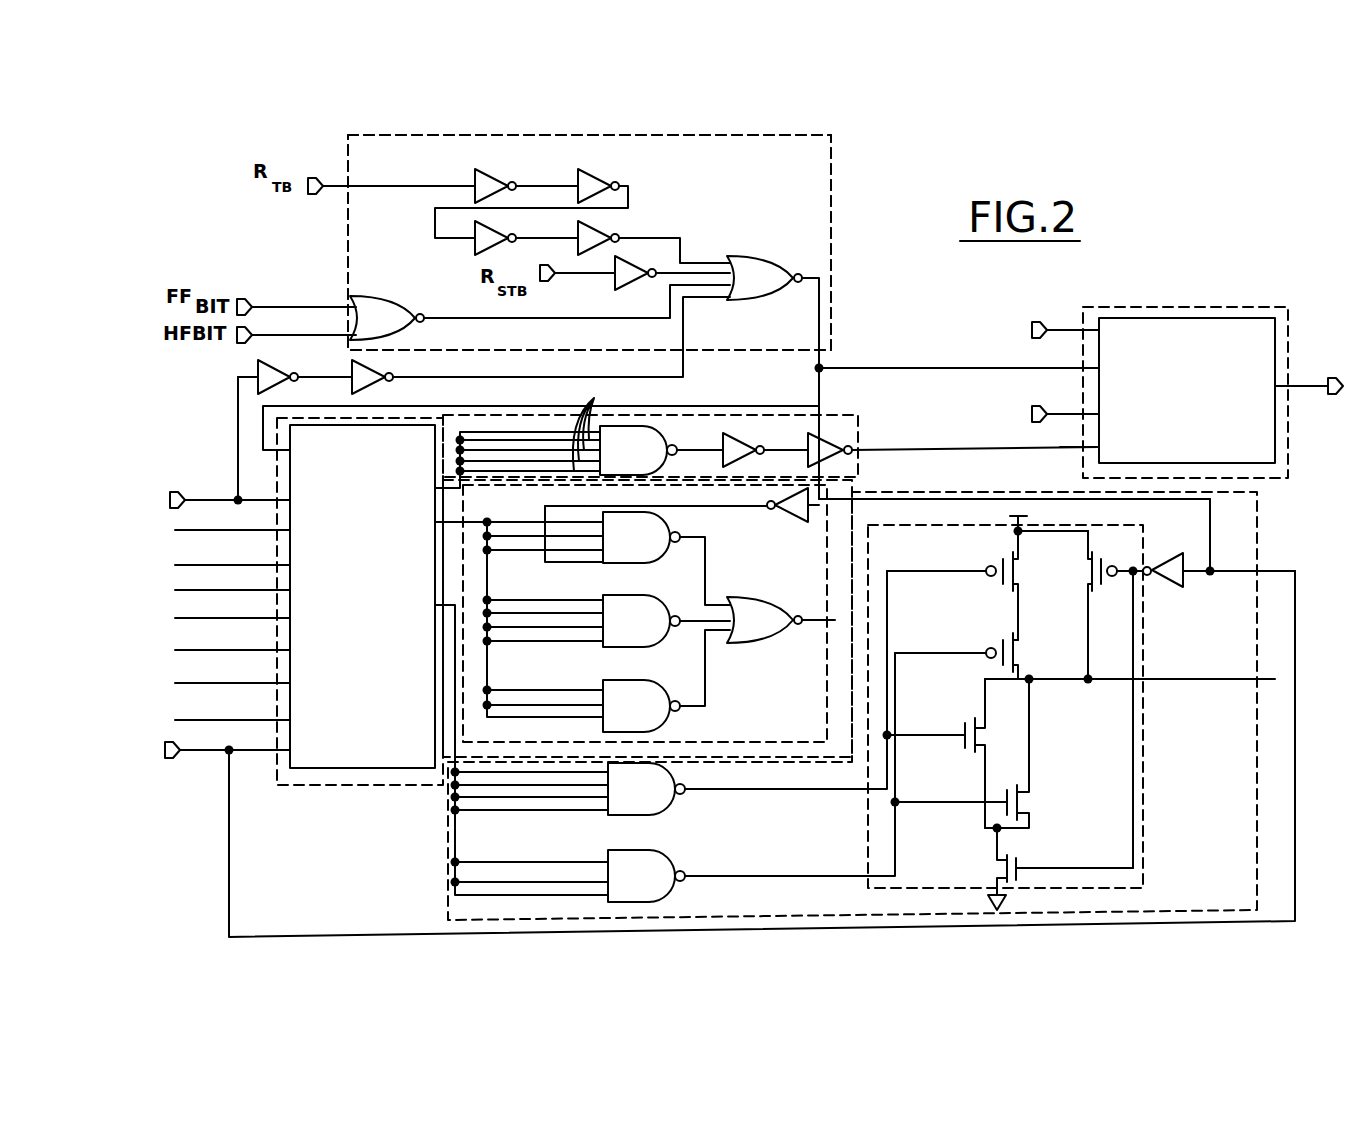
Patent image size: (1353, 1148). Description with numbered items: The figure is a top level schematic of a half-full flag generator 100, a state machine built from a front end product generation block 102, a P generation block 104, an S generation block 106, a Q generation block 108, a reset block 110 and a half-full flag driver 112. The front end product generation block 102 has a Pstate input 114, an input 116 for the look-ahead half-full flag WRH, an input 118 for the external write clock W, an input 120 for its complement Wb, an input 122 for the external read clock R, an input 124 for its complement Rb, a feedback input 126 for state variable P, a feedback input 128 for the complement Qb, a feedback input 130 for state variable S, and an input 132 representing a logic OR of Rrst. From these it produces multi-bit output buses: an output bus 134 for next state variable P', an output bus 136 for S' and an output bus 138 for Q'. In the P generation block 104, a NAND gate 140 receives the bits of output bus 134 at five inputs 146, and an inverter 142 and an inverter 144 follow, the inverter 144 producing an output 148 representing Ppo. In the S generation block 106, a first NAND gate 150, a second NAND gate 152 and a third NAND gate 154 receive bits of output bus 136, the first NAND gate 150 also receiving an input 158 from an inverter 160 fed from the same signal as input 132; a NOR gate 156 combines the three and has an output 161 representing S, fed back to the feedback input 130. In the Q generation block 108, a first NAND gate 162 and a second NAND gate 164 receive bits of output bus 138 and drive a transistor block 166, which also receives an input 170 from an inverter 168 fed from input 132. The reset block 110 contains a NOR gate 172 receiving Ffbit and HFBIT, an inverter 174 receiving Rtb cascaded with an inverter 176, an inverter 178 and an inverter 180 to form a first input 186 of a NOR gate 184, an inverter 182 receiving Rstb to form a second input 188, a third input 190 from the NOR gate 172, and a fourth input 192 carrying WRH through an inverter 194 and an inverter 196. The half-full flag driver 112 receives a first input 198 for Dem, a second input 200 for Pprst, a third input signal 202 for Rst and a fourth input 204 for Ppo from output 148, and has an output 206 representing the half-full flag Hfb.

The half-full flag generator 100 is at (260, 116).
The front end product generation block 102 is at (365, 785).
The P generation block 104 is at (842, 415).
The S generation block 106 is at (808, 748).
The Q generation block 108 is at (450, 835).
The reset block 110 is at (834, 170).
The half-full flag driver 112 is at (1206, 300).
The Pstate input 114 is at (262, 432).
The input 116 is at (218, 498).
The input 118 is at (174, 529).
The input 120 is at (188, 564).
The input 122 is at (176, 590).
The input 124 is at (176, 618).
The feedback input 126 is at (176, 649).
The feedback input 128 is at (176, 682).
The feedback input 130 is at (180, 719).
The input 132 is at (710, 754).
The output bus 134 is at (440, 485).
The output bus 136 is at (443, 522).
The output bus 138 is at (435, 613).
The NAND gate 140 is at (668, 449).
The inverter 142 is at (751, 450).
The inverter 144 is at (859, 460).
The inputs 146 is at (593, 406).
The output 148 is at (954, 449).
The first NAND gate 150 is at (673, 532).
The second NAND gate 152 is at (642, 596).
The third NAND gate 154 is at (647, 681).
The NOR gate 156 is at (775, 588).
The input 158 is at (600, 515).
The inverter 160 is at (808, 525).
The output 161 is at (832, 612).
The first NAND gate 162 is at (669, 796).
The second NAND gate 164 is at (672, 861).
The transistor block 166 is at (1083, 530).
The inverter 168 is at (1182, 586).
The input 170 is at (1140, 565).
The NOR gate 172 is at (386, 310).
The inverter 174 is at (499, 182).
The inverter 176 is at (619, 182).
The inverter 178 is at (499, 240).
The inverter 180 is at (624, 236).
The inverter 182 is at (615, 288).
The NOR gate 184 is at (768, 270).
The first input 186 is at (728, 272).
The second input 188 is at (726, 262).
The third input 190 is at (726, 286).
The fourth input 192 is at (704, 298).
The inverter 194 is at (386, 378).
The inverter 196 is at (268, 379).
The first input 198 is at (1076, 325).
The second input 200 is at (1055, 367).
The third input signal 202 is at (1061, 410).
The fourth input 204 is at (1066, 450).
The output 206 is at (1300, 392).